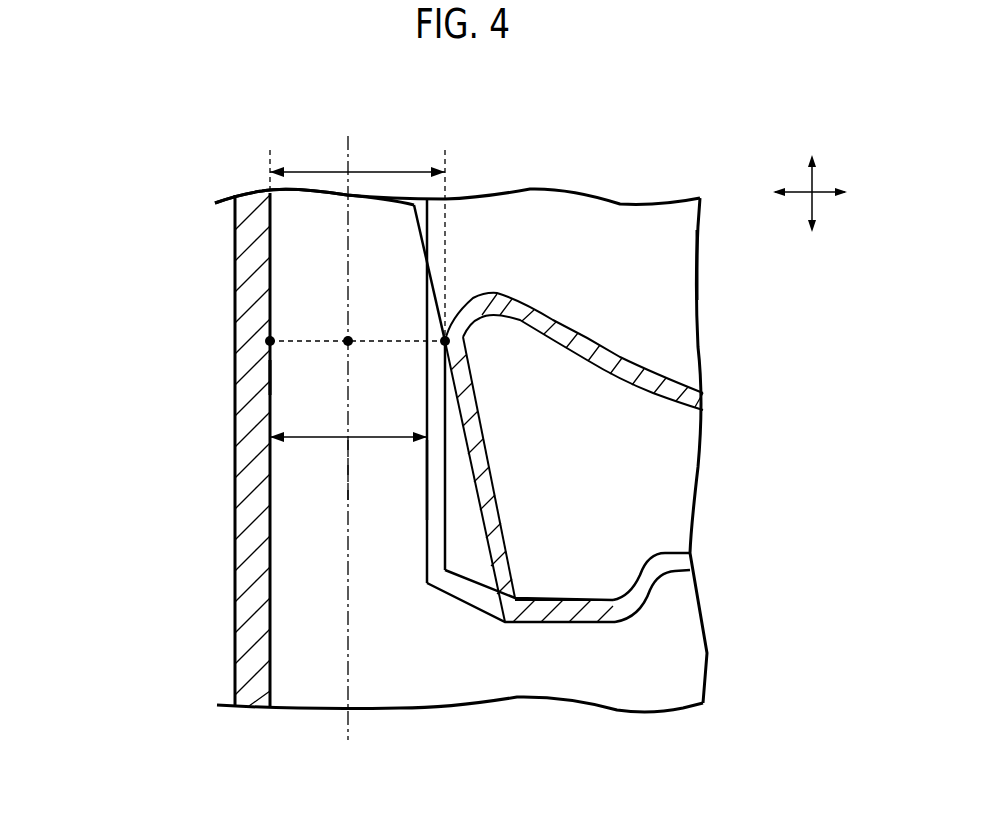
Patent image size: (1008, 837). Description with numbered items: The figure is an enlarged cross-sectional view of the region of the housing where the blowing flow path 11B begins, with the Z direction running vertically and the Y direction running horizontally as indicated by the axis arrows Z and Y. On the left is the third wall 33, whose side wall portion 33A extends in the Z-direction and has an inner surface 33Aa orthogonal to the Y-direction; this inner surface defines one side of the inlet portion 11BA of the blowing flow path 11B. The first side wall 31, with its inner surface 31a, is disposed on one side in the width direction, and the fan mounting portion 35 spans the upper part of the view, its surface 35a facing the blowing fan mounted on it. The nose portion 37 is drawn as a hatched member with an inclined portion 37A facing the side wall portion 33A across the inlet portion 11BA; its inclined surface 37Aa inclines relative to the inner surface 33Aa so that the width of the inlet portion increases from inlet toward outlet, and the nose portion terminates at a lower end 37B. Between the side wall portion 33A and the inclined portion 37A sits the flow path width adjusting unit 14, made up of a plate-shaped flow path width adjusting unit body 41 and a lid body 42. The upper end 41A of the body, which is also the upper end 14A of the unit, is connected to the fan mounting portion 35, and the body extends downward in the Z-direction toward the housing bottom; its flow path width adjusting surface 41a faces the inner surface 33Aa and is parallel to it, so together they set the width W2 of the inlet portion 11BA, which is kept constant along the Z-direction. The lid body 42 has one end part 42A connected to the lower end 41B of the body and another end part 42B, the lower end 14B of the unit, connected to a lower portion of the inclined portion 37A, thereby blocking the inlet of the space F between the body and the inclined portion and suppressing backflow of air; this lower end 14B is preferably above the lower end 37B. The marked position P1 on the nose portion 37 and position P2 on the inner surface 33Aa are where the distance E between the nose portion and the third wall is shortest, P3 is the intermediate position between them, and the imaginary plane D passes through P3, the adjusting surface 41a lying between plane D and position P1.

The first side wall 31 is at (259, 204).
The inner surface 31a is at (363, 228).
The third wall 33 is at (170, 449).
The side wall portion 33A is at (177, 449).
The inner surface 33Aa is at (275, 388).
The fan mounting portion 35 is at (501, 415).
The surface 35a is at (640, 295).
The nose portion 37 is at (622, 530).
The inclined portion 37A is at (619, 479).
The inclined surface 37Aa is at (480, 510).
The lower end 37B is at (573, 623).
The flow path width adjusting unit 14 is at (428, 497).
The upper end 14A is at (441, 412).
The lower end 14B is at (521, 683).
The flow path width adjusting unit body 41 is at (441, 434).
The upper end 41A is at (446, 412).
The flow path width adjusting surface 41a is at (427, 475).
The lower end 41B is at (437, 557).
The lid body 42 is at (451, 654).
The one end part 42A is at (450, 575).
The other end part 42B is at (497, 607).
The inlet portion 11BA is at (328, 467).
The blowing flow path 11B is at (202, 492).
The position P1 is at (445, 341).
The position P2 is at (270, 341).
The intermediate position P3 is at (348, 341).
The imaginary plane D is at (347, 148).
The distance E is at (383, 170).
The width W2 is at (325, 437).
The space F is at (463, 530).
The Z-direction Z is at (811, 179).
The Y-direction Y is at (822, 197).